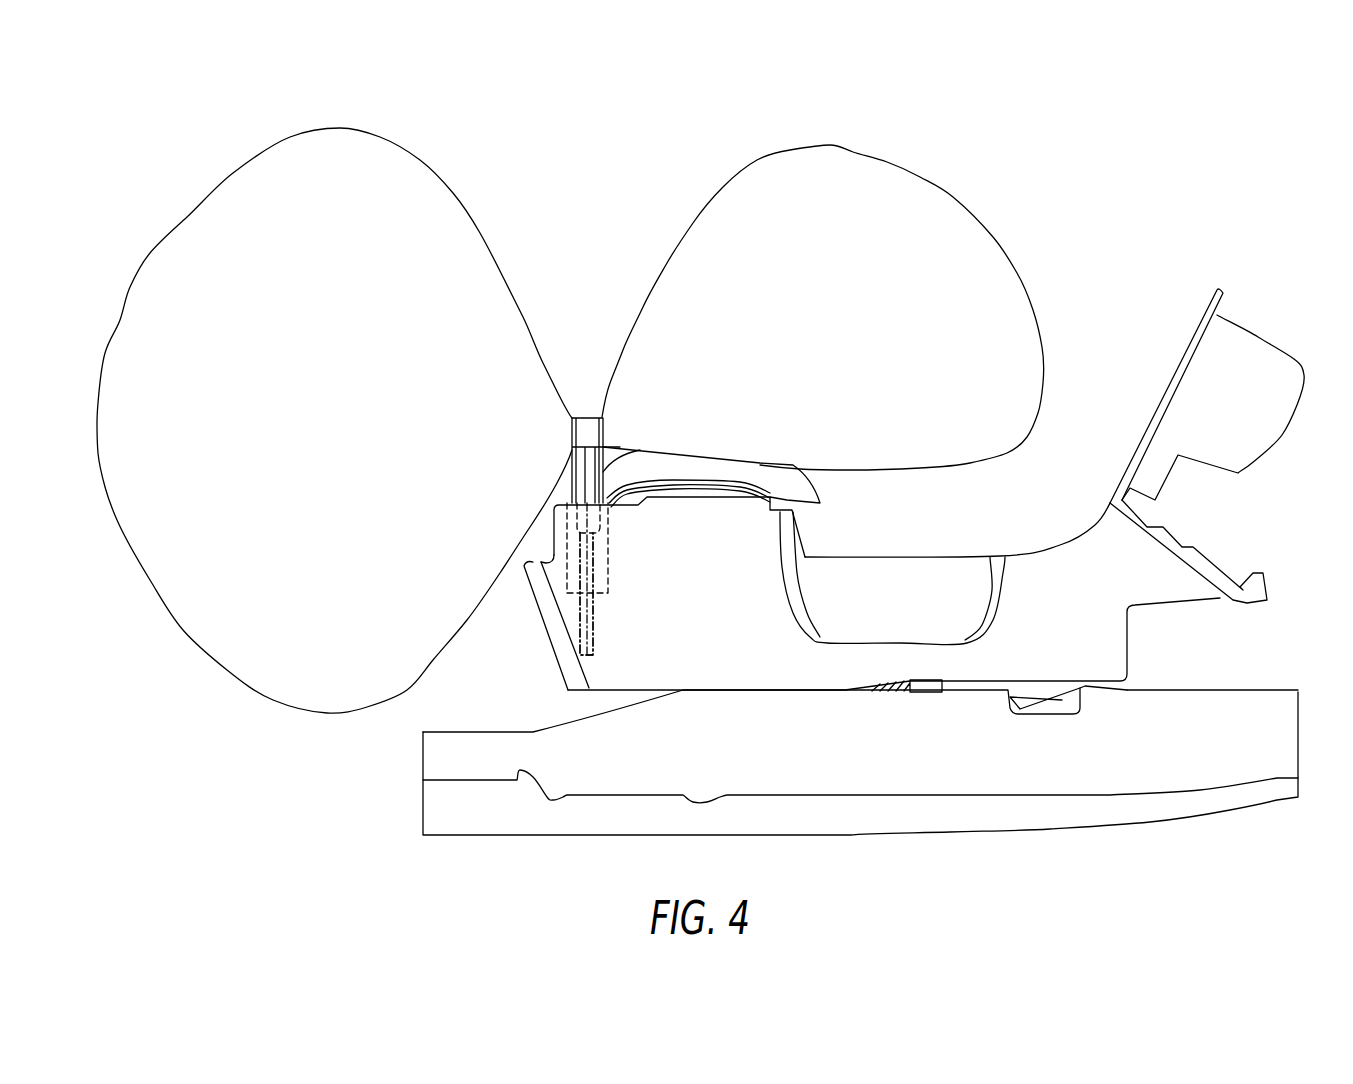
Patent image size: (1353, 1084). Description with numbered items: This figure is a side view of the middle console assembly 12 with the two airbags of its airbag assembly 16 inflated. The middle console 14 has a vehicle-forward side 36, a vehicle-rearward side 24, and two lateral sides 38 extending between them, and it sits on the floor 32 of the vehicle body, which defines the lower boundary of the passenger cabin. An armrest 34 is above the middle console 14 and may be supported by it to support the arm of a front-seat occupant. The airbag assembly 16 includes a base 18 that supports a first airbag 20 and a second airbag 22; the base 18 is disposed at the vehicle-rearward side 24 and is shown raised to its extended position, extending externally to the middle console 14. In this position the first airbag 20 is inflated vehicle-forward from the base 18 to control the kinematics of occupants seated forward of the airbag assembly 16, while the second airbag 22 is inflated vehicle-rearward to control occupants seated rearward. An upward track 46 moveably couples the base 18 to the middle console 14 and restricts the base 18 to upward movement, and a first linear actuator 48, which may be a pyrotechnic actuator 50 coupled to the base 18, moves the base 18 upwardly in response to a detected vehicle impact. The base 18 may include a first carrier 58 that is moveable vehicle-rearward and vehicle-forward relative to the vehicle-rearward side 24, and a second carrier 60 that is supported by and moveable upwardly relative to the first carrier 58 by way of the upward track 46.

The middle console assembly 12 is at (1121, 250).
The middle console 14 is at (860, 737).
The airbag assembly 16 is at (575, 388).
The base 18 is at (600, 468).
The first airbag 20 is at (187, 213).
The second airbag 22 is at (967, 207).
The vehicle-rearward side 24 is at (804, 600).
The floor 32 is at (1207, 692).
The armrest 34 is at (793, 485).
The vehicle-forward side 36 is at (793, 593).
The lateral sides 38 is at (700, 587).
The upward track 46 is at (560, 573).
The first linear actuator 48 is at (580, 627).
The pyrotechnic actuator 50 is at (536, 618).
The first carrier 58 is at (570, 458).
The second carrier 60 is at (532, 612).